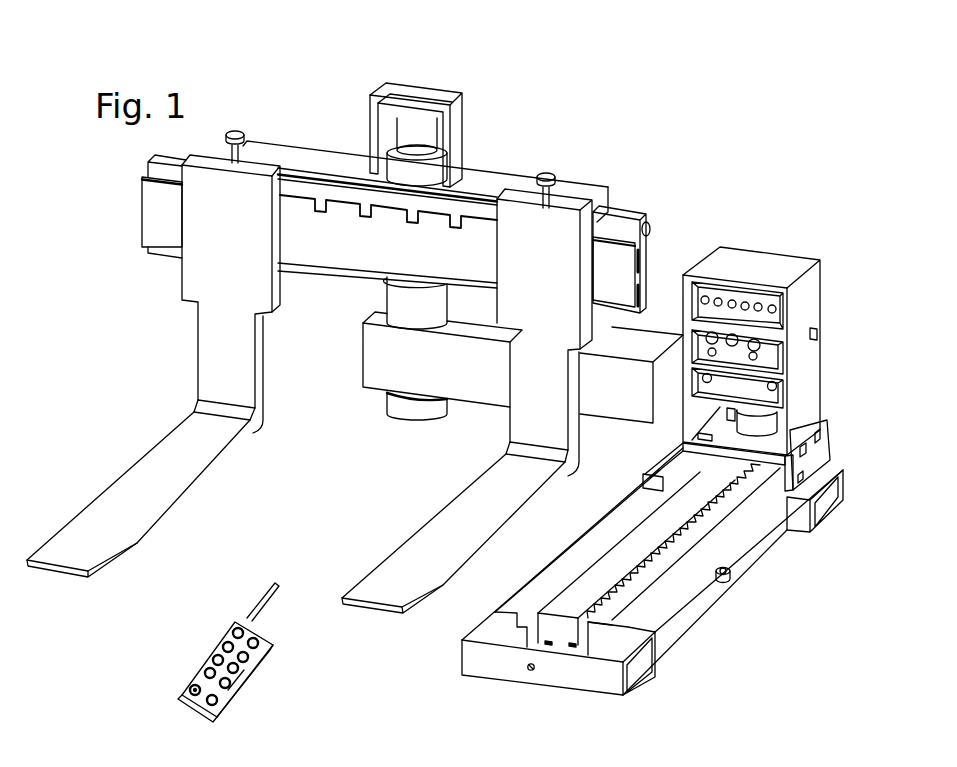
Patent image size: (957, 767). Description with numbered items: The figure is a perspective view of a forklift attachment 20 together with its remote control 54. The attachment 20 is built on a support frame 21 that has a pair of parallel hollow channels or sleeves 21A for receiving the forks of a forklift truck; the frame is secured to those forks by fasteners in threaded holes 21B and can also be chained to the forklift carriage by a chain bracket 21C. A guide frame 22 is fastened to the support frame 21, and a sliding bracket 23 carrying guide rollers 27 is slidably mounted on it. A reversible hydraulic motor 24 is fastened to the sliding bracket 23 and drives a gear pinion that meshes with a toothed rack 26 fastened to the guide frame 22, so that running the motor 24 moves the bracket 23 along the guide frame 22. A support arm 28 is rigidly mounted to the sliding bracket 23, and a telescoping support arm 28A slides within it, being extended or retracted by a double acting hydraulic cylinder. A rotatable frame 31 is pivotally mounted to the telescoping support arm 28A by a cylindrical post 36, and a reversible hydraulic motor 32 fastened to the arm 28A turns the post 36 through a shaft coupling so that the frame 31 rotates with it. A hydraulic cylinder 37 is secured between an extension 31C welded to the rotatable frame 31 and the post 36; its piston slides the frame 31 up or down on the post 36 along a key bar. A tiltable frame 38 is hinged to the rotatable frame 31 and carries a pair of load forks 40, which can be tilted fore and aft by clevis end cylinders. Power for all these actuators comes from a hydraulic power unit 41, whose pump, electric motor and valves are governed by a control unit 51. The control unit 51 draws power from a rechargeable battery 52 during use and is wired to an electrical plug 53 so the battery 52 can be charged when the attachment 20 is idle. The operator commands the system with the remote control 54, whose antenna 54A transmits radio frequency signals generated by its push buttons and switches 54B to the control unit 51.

The attachment 20 is at (757, 73).
The support frame 21 is at (578, 678).
The hollow channels or sleeves 21A is at (640, 680).
The threaded holes 21B is at (528, 670).
The chain bracket 21C is at (722, 581).
The guide frame 22 is at (555, 587).
The sliding bracket 23 is at (813, 438).
The reversible hydraulic motor 24 is at (767, 422).
The toothed rack 26 is at (645, 543).
The guide rollers 27 is at (700, 438).
The support arm 28 is at (670, 360).
The telescoping support arm 28A is at (482, 393).
The rotatable frame 31 is at (272, 150).
The extension 31C is at (458, 113).
The reversible hydraulic motor 32 is at (402, 408).
The cylindrical post 36 is at (393, 292).
The hydraulic cylinder 37 is at (428, 143).
The tiltable frame 38 is at (626, 220).
The load forks 40 is at (155, 522).
The hydraulic power unit 41 is at (747, 313).
The control unit 51 is at (773, 345).
The rechargeable battery 52 is at (762, 382).
The electrical plug 53 is at (813, 330).
The remote control 54 is at (203, 667).
The antenna 54A is at (260, 602).
The push buttons and switches 54B is at (237, 673).